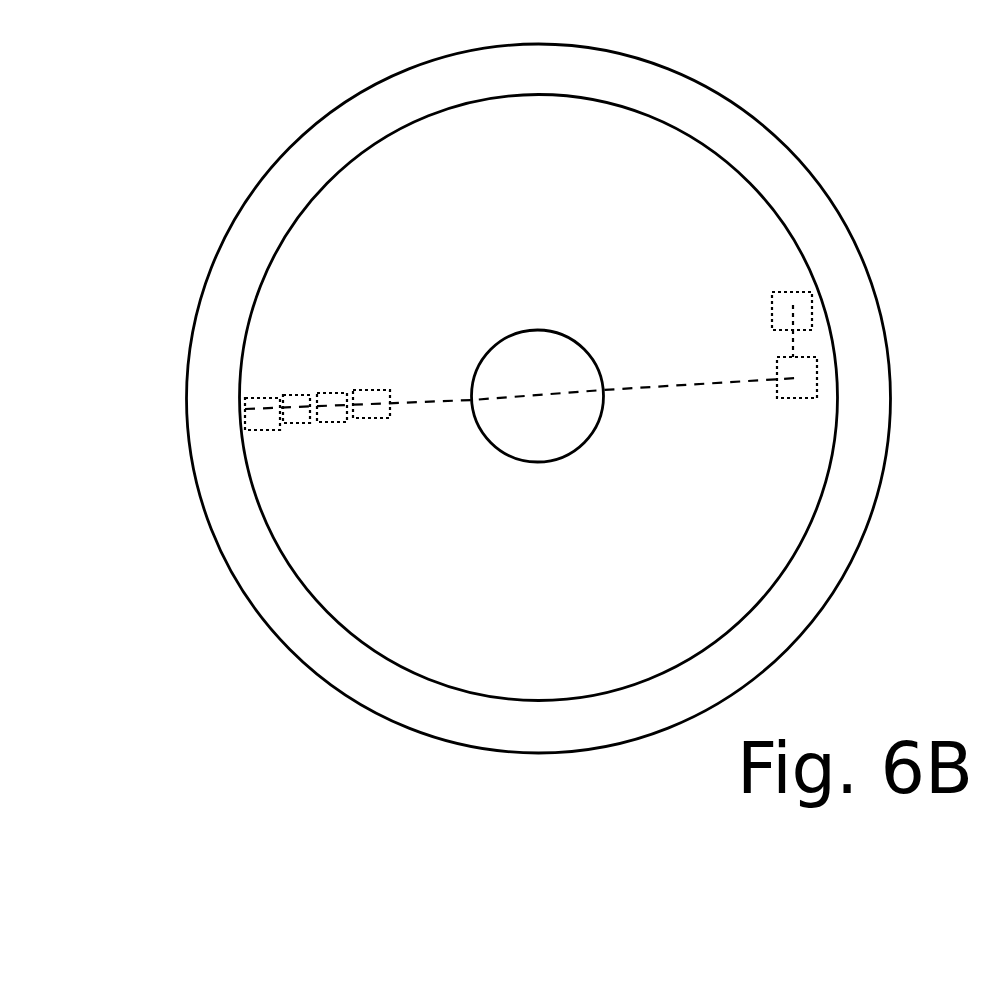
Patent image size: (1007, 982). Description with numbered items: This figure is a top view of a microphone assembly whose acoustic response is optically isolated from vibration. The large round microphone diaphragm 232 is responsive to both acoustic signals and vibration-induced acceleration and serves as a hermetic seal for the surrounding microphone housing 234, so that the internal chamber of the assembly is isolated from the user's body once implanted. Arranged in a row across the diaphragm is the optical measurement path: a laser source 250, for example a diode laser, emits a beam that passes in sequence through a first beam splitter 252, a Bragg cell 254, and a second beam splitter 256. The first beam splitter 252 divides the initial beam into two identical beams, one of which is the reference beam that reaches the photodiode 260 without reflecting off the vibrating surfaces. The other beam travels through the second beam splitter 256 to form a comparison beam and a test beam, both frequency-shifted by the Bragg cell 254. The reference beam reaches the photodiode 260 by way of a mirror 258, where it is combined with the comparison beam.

The microphone diaphragm 232 is at (657, 201).
The microphone housing 234 is at (793, 185).
The laser source 250 is at (257, 407).
The first beam splitter 252 is at (300, 422).
The Bragg cell 254 is at (330, 400).
The second beam splitter 256 is at (373, 413).
The mirror 258 is at (785, 398).
The photodiode 260 is at (772, 312).